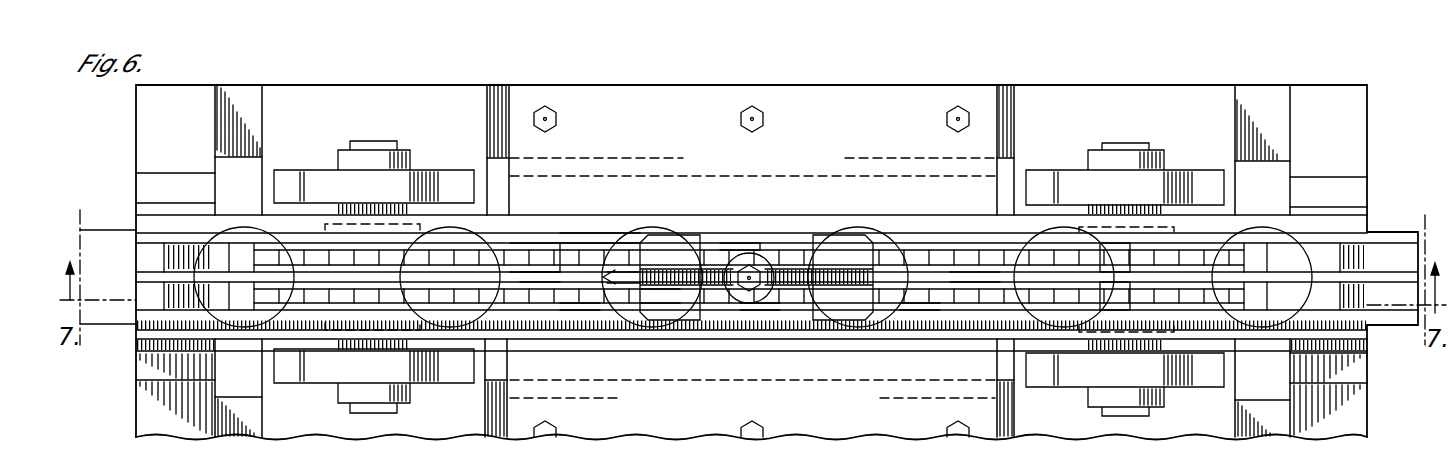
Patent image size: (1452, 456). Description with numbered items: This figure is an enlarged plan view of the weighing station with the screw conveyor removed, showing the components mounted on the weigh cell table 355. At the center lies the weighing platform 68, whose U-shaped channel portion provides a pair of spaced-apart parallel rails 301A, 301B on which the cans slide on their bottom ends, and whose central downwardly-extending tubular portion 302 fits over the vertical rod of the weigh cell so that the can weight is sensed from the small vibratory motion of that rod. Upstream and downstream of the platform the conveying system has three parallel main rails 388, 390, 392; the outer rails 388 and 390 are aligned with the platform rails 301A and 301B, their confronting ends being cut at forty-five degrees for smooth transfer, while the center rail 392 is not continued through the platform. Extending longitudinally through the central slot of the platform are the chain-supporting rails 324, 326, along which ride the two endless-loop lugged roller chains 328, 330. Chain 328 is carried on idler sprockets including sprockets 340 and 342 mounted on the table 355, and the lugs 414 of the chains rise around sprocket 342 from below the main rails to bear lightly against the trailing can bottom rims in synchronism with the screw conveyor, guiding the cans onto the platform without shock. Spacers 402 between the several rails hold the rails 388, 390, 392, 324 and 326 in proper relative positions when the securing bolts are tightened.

The weigh cell table 355 is at (1058, 86).
The idler sprocket 340 is at (308, 253).
The idler sprocket 342 is at (1196, 258).
The spacer 402 is at (155, 260).
The chain-supporting rail 324 is at (527, 262).
The main conveyor rail 388 is at (595, 240).
The weighing platform rail 301A is at (693, 240).
The weighing platform rail 301B is at (693, 315).
The lugged roller chain 328 is at (733, 247).
The weighing platform 68 is at (770, 246).
The center main rail 392 is at (540, 278).
The main conveyor rail 390 is at (580, 313).
The chain-supporting rail 326 is at (657, 296).
The lugged roller chain 330 is at (759, 302).
The tubular portion 302 is at (760, 285).
The lug 414 is at (1114, 246).